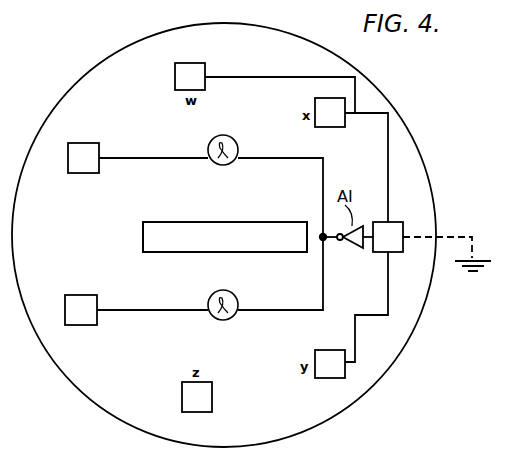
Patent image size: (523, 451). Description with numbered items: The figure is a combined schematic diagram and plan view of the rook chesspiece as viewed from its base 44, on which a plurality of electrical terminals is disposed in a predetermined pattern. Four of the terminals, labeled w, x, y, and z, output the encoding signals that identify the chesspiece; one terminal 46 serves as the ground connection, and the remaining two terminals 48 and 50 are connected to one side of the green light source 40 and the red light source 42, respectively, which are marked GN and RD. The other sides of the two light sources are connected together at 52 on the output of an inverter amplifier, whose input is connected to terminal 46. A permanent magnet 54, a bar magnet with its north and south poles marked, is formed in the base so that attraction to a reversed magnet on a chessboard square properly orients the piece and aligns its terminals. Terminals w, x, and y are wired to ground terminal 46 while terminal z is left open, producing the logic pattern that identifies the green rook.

The light source 40 is at (232, 140).
The light source 42 is at (222, 320).
The base 44 is at (263, 40).
The terminal 46 is at (397, 228).
The terminal 48 is at (90, 148).
The terminal 50 is at (78, 302).
The connection point 52 is at (322, 233).
The permanent magnet 54 is at (183, 230).